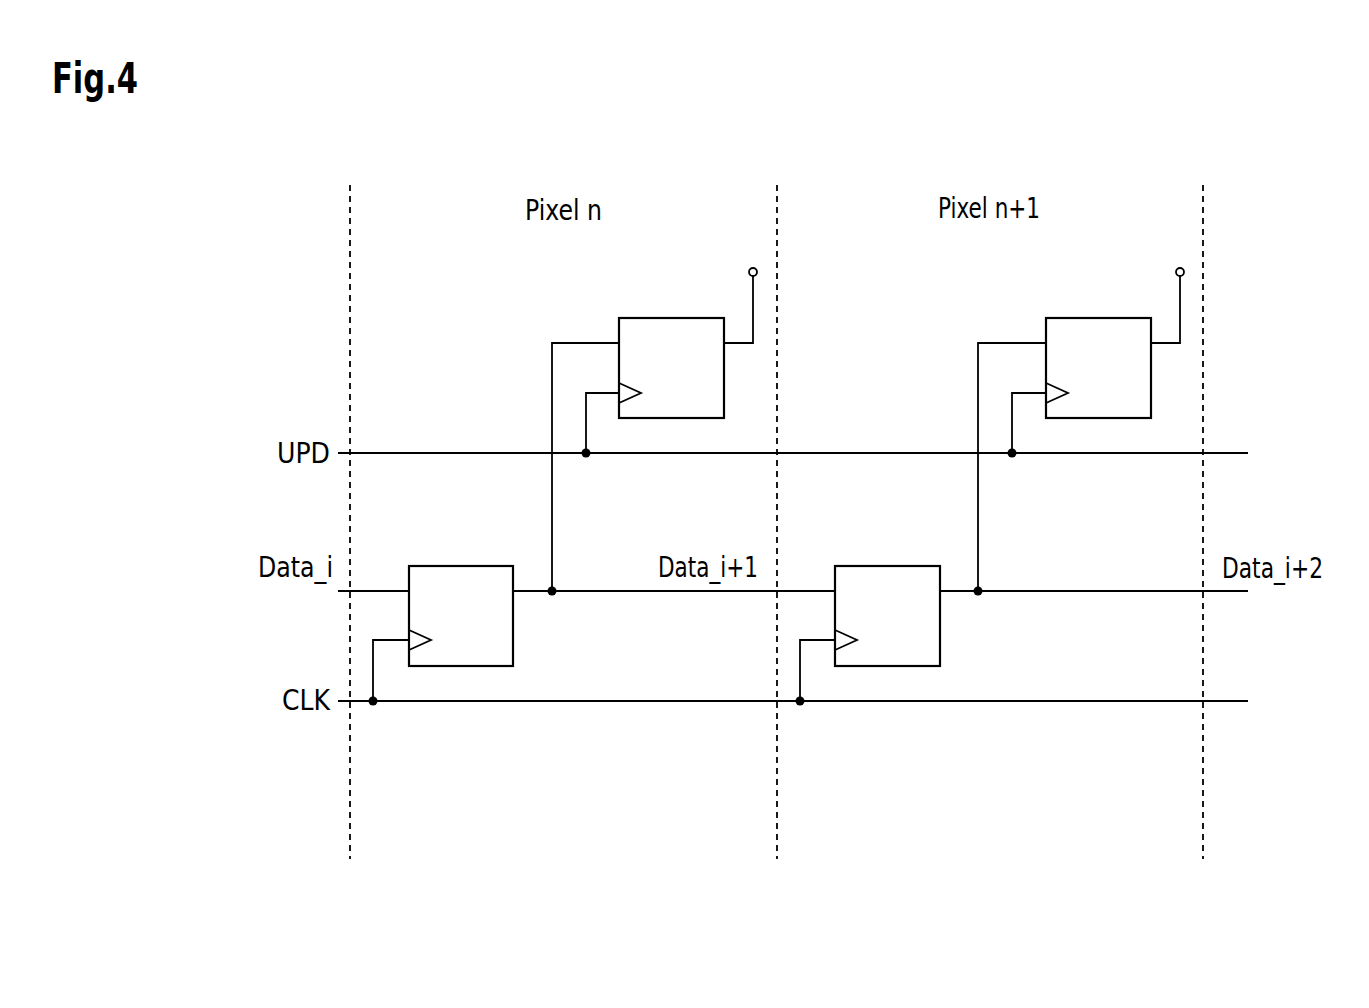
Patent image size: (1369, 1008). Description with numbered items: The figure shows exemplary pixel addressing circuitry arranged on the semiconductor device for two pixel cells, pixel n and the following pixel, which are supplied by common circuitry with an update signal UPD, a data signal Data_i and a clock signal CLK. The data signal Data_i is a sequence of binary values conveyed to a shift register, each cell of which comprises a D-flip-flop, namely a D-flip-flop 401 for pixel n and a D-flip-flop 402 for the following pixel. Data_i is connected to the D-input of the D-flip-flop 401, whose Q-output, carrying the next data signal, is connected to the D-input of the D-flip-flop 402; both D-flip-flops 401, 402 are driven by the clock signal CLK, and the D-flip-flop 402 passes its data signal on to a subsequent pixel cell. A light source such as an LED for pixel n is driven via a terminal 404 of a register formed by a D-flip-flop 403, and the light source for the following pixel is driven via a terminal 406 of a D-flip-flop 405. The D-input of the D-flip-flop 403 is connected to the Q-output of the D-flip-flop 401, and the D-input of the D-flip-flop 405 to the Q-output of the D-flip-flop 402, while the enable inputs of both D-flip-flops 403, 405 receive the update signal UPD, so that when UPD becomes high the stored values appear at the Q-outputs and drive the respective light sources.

The D-flip-flop 401 is at (513, 643).
The D-flip-flop 402 is at (940, 643).
The D-flip-flop 403 is at (663, 318).
The terminal 404 is at (748, 288).
The D-flip-flop 405 is at (1088, 318).
The terminal 406 is at (1173, 288).